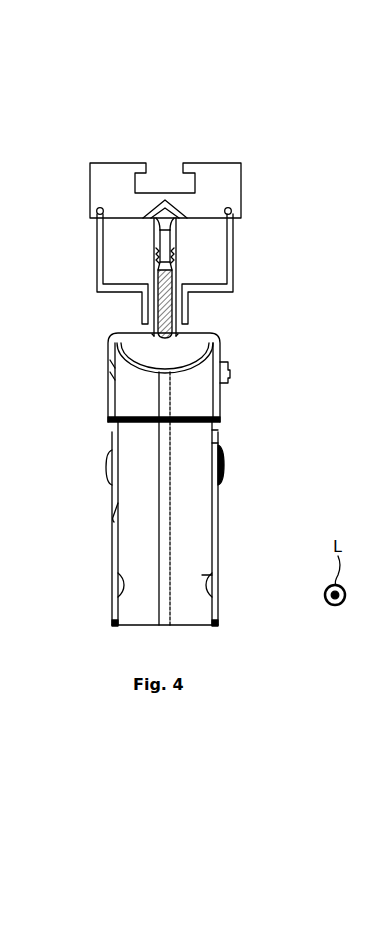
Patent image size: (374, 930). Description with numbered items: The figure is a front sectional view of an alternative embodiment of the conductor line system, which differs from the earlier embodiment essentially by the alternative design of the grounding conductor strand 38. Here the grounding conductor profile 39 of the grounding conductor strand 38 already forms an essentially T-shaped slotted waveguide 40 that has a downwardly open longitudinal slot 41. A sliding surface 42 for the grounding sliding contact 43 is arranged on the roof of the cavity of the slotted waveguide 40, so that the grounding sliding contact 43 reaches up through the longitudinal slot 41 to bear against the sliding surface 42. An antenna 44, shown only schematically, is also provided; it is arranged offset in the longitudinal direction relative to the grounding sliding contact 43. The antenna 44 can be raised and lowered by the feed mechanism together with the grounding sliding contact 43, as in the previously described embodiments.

The grounding conductor strand 38 is at (219, 120).
The grounding conductor profile 39 is at (103, 163).
The slotted waveguide 40 is at (207, 233).
The longitudinal slot 41 is at (150, 281).
The sliding surface 42 is at (158, 198).
The grounding sliding contact 43 is at (176, 243).
The antenna 44 is at (170, 308).